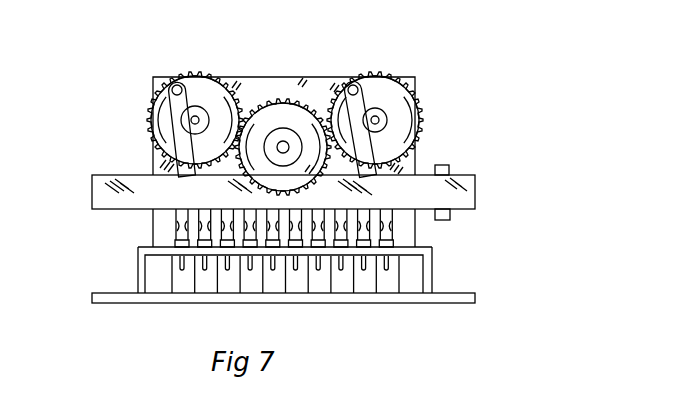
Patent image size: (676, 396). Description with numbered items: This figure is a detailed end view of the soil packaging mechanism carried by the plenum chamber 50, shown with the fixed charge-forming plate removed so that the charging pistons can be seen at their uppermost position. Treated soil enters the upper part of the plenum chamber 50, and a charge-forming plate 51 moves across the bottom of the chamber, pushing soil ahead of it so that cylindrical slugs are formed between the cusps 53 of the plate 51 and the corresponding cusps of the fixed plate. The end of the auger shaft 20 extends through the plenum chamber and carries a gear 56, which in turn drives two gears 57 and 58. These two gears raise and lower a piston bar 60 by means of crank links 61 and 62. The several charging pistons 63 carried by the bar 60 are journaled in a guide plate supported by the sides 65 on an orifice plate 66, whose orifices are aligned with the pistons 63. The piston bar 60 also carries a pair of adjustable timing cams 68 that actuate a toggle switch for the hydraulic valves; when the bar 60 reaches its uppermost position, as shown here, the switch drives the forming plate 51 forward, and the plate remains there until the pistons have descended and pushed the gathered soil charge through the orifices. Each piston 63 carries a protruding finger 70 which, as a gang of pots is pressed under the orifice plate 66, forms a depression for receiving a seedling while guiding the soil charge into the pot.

The auger shaft 20 is at (285, 143).
The plenum chamber 50 is at (293, 78).
The charge-forming plate 51 is at (413, 283).
The cusps 53 is at (330, 282).
The gear 56 is at (272, 103).
The gear 57 is at (165, 99).
The gear 58 is at (390, 72).
The piston bar 60 is at (468, 202).
The crank link 61 is at (180, 137).
The crank link 62 is at (363, 148).
The charging pistons 63 is at (415, 242).
The sides 65 is at (432, 277).
The orifice plate 66 is at (185, 300).
The adjustable timing cams 68 is at (450, 167).
The protruding finger 70 is at (203, 272).